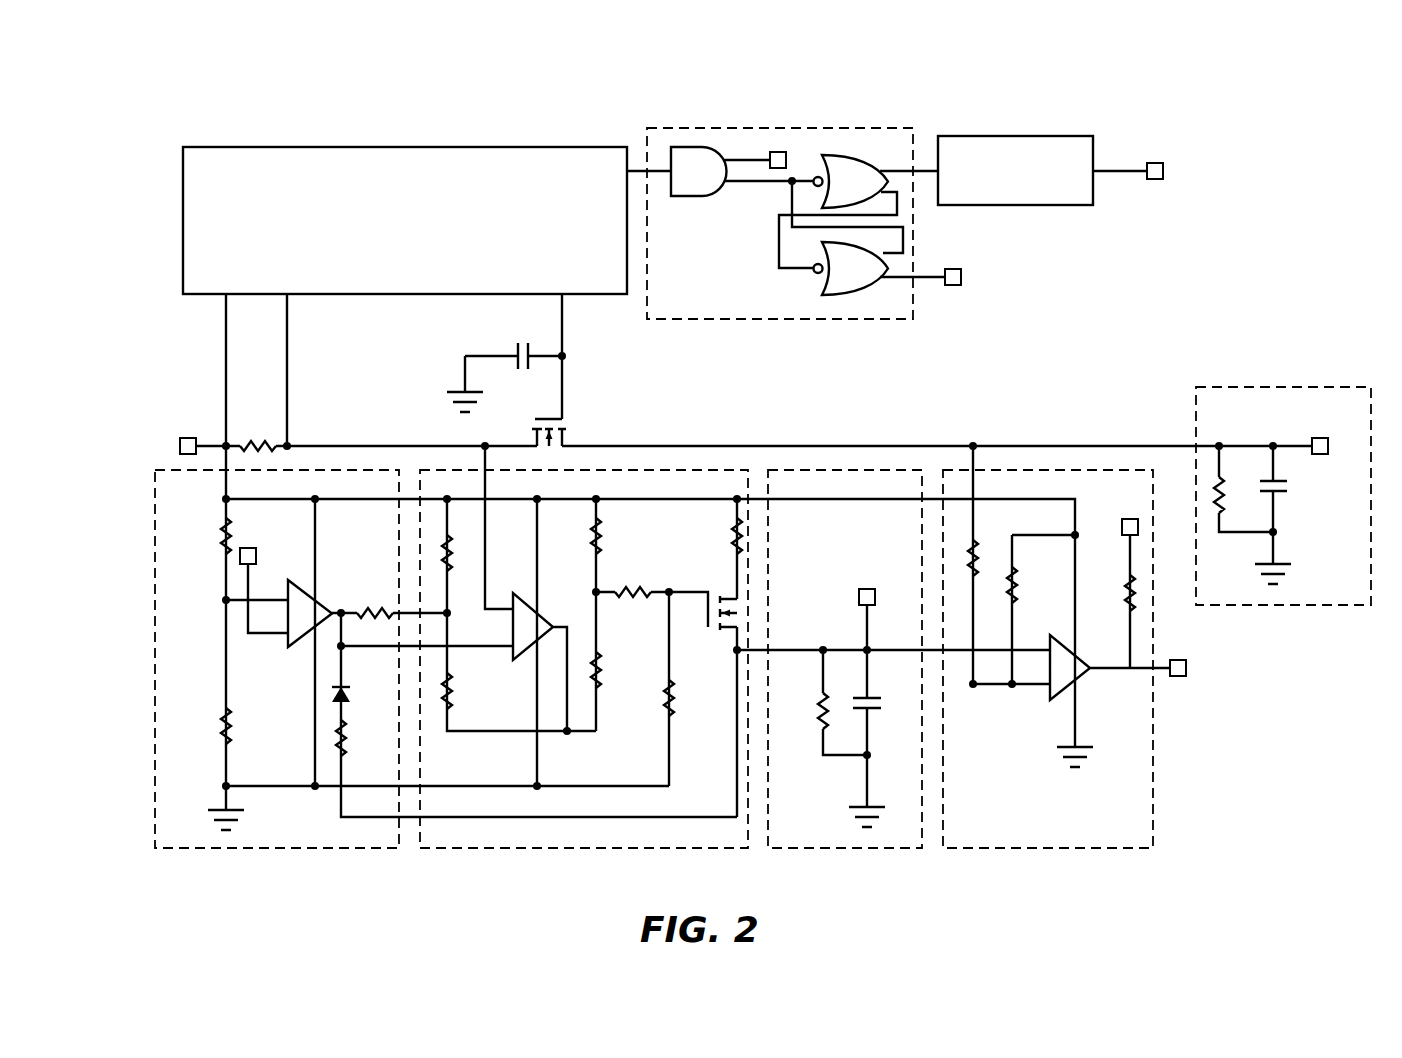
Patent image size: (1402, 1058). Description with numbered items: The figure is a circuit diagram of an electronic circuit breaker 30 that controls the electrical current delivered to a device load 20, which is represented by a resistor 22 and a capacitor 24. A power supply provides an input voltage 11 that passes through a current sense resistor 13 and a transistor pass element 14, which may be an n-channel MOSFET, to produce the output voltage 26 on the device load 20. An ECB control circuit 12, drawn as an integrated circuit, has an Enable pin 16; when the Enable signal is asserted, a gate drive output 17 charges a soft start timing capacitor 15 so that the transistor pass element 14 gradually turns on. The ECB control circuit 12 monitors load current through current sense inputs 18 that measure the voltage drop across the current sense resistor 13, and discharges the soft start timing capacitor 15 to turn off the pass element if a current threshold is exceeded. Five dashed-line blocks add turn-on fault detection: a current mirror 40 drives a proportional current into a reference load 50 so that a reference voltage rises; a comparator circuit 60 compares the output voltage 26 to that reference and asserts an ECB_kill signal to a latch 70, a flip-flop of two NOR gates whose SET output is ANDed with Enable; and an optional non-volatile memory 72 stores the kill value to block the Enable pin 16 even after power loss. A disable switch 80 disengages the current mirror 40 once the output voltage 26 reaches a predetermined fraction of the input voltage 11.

The electronic circuit breaker 30 is at (218, 100).
The ECB control circuit 12 is at (403, 147).
The Enable pin 16 is at (607, 147).
The non-volatile memory 72 is at (1015, 136).
The latch 70 is at (770, 320).
The input voltage 11 is at (188, 438).
The current sense resistor 13 is at (265, 443).
The current sense inputs 18 is at (276, 294).
The soft start timing capacitor 15 is at (518, 343).
The gate drive output 17 is at (578, 294).
The transistor pass element 14 is at (584, 418).
The disable switch 80 is at (287, 848).
The current mirror 40 is at (583, 848).
The reference load 50 is at (845, 848).
The comparator circuit 60 is at (1048, 848).
The device load 20 is at (1285, 387).
The resistor 22 is at (1217, 477).
The capacitor 24 is at (1288, 491).
The output voltage 26 is at (1333, 445).